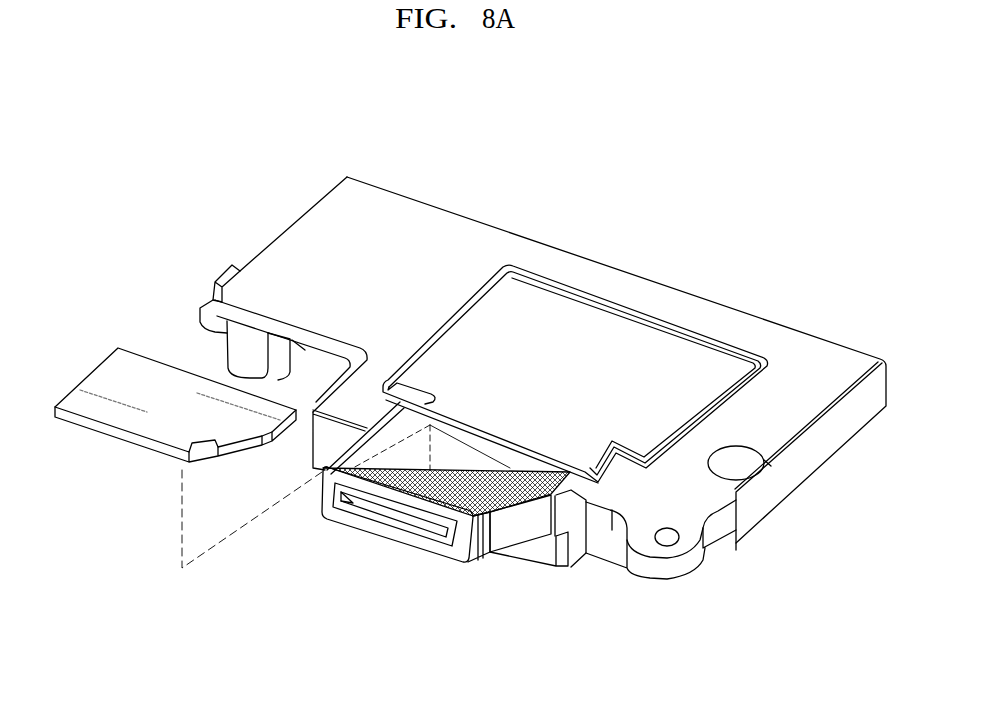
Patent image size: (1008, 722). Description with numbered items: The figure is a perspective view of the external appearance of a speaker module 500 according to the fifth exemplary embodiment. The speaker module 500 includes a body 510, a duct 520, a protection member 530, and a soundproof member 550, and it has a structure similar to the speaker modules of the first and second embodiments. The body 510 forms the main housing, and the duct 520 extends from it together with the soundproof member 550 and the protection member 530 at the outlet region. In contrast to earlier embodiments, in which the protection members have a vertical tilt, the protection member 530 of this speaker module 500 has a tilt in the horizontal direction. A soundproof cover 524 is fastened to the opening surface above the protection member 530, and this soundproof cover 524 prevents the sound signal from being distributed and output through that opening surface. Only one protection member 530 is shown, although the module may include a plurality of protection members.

The speaker module 500 is at (700, 249).
The body 510 is at (803, 338).
The duct 520 is at (522, 530).
The soundproof cover 524 is at (132, 417).
The protection member 530 is at (438, 487).
The soundproof member 550 is at (482, 557).